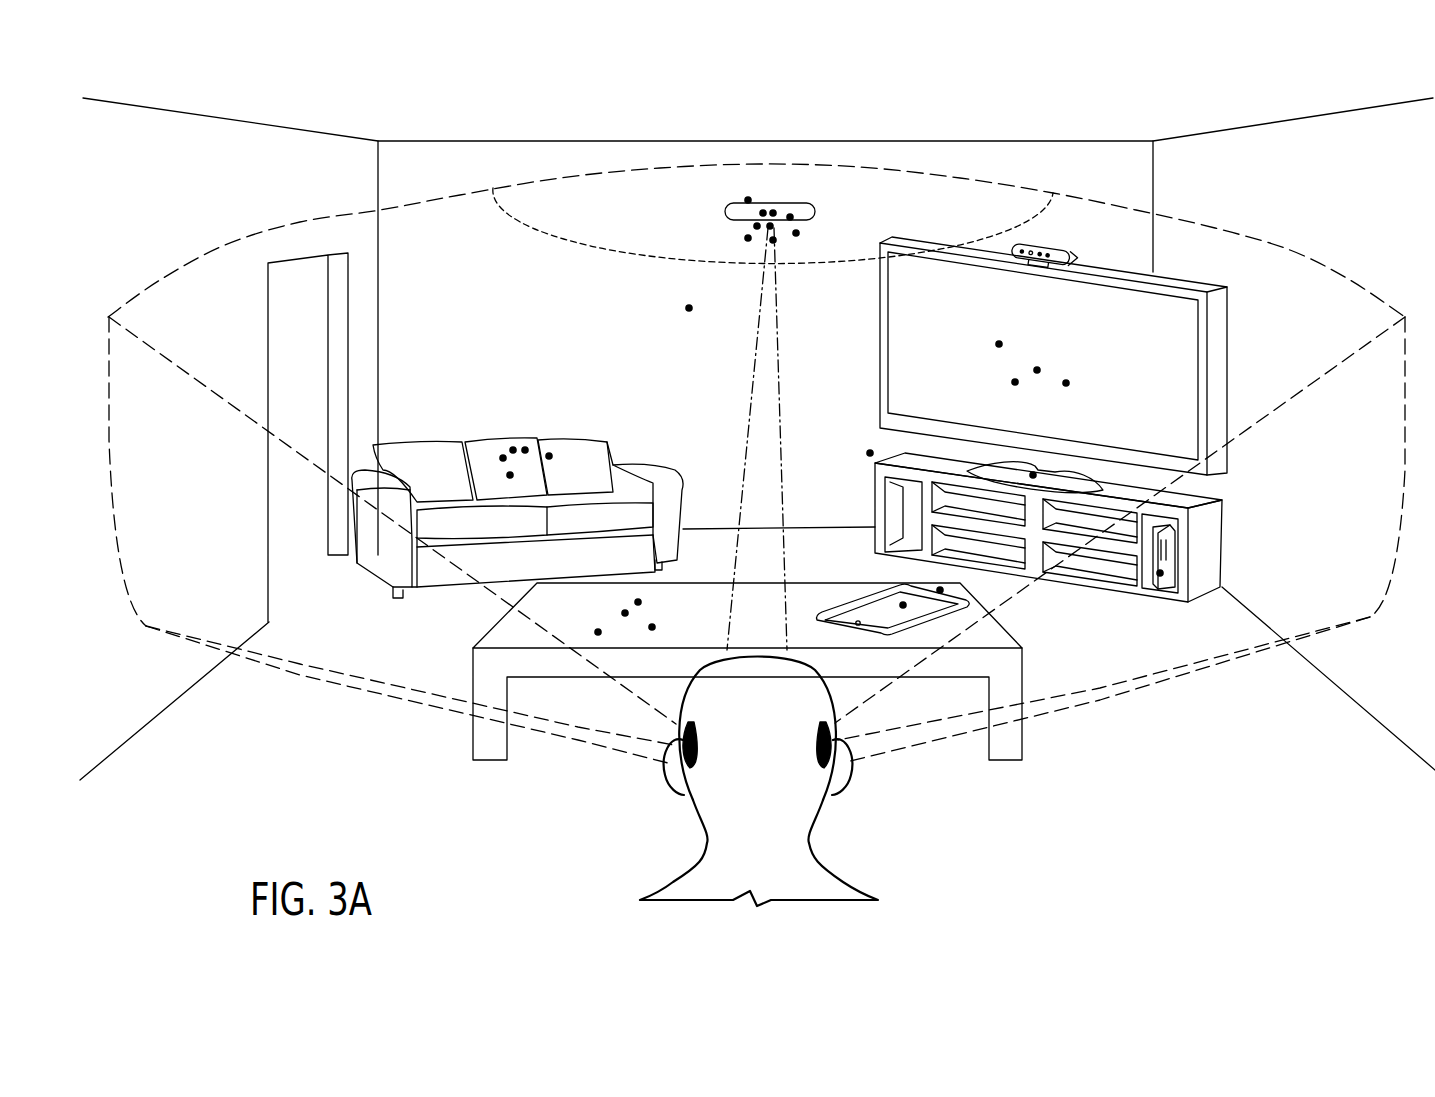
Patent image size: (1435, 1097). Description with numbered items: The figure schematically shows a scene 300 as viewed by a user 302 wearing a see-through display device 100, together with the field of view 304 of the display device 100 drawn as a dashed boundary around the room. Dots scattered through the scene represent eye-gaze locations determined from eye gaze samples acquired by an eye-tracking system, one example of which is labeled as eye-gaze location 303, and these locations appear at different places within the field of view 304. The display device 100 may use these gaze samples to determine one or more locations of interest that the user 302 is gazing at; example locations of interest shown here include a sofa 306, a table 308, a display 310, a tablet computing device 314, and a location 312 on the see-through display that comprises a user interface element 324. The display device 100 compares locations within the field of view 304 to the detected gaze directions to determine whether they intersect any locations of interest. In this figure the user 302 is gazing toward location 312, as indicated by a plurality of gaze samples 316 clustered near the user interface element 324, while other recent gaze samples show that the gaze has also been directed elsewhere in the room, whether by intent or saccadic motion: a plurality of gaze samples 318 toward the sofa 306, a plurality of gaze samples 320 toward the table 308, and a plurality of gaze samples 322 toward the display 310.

The display device 100 is at (687, 790).
The scene 300 is at (1082, 112).
The user 302 is at (772, 756).
The eye-gaze location 303 is at (684, 297).
The field of view 304 is at (485, 190).
The sofa 306 is at (437, 440).
The table 308 is at (500, 617).
The display 310 is at (1192, 329).
The location on the see-through display 312 is at (587, 245).
The tablet computing device 314 is at (857, 602).
The plurality of gaze samples 316 is at (779, 191).
The plurality of gaze samples 318 is at (530, 426).
The plurality of gaze samples 320 is at (651, 591).
The plurality of gaze samples 322 is at (987, 327).
The user interface element 324 is at (740, 203).